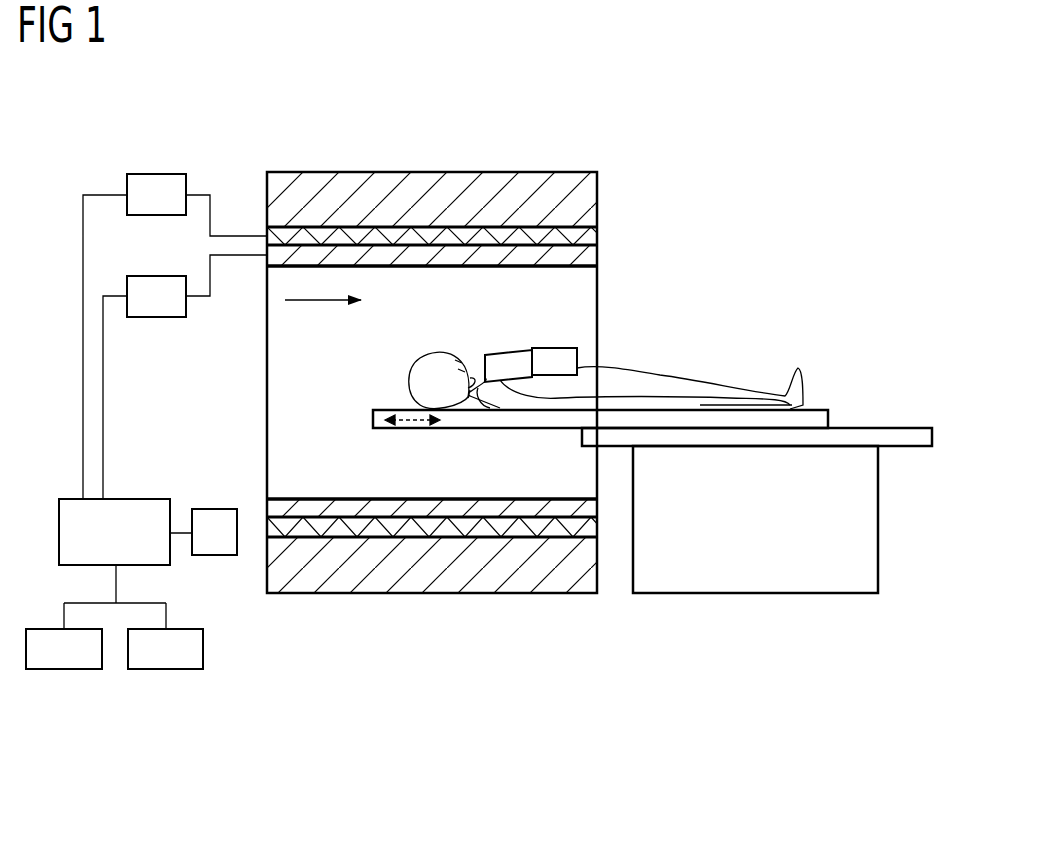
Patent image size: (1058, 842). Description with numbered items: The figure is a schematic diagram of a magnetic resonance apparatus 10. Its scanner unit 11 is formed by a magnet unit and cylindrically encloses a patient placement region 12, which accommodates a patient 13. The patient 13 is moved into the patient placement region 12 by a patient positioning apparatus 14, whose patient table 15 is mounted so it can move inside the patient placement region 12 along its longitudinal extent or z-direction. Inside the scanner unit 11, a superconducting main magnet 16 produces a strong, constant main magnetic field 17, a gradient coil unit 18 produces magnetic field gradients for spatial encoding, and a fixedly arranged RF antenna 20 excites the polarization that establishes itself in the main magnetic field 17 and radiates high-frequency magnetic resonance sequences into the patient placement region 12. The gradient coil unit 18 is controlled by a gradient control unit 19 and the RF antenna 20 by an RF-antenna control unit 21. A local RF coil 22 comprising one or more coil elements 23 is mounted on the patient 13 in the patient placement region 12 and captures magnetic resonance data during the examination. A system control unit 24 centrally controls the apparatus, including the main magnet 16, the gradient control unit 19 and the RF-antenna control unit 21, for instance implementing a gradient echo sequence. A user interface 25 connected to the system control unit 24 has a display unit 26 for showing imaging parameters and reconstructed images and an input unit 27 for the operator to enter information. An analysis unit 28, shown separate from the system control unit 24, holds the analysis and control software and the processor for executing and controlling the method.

The magnetic resonance apparatus 10 is at (461, 664).
The scanner unit 11 is at (606, 193).
The patient placement region 12 is at (576, 293).
The patient 13 is at (731, 398).
The patient positioning apparatus 14 is at (882, 421).
The patient table 15 is at (815, 410).
The main magnet 16 is at (510, 182).
The main magnetic field 17 is at (267, 306).
The gradient coil unit 18 is at (395, 236).
The gradient control unit 19 is at (155, 174).
The RF antenna 20 is at (333, 258).
The RF-antenna control unit 21 is at (157, 317).
The local RF coil 22 is at (525, 338).
The coil element 23 is at (579, 368).
The system control unit 24 is at (142, 499).
The user interface 25 is at (115, 676).
The display unit 26 is at (60, 669).
The input unit 27 is at (165, 669).
The analysis unit 28 is at (214, 509).